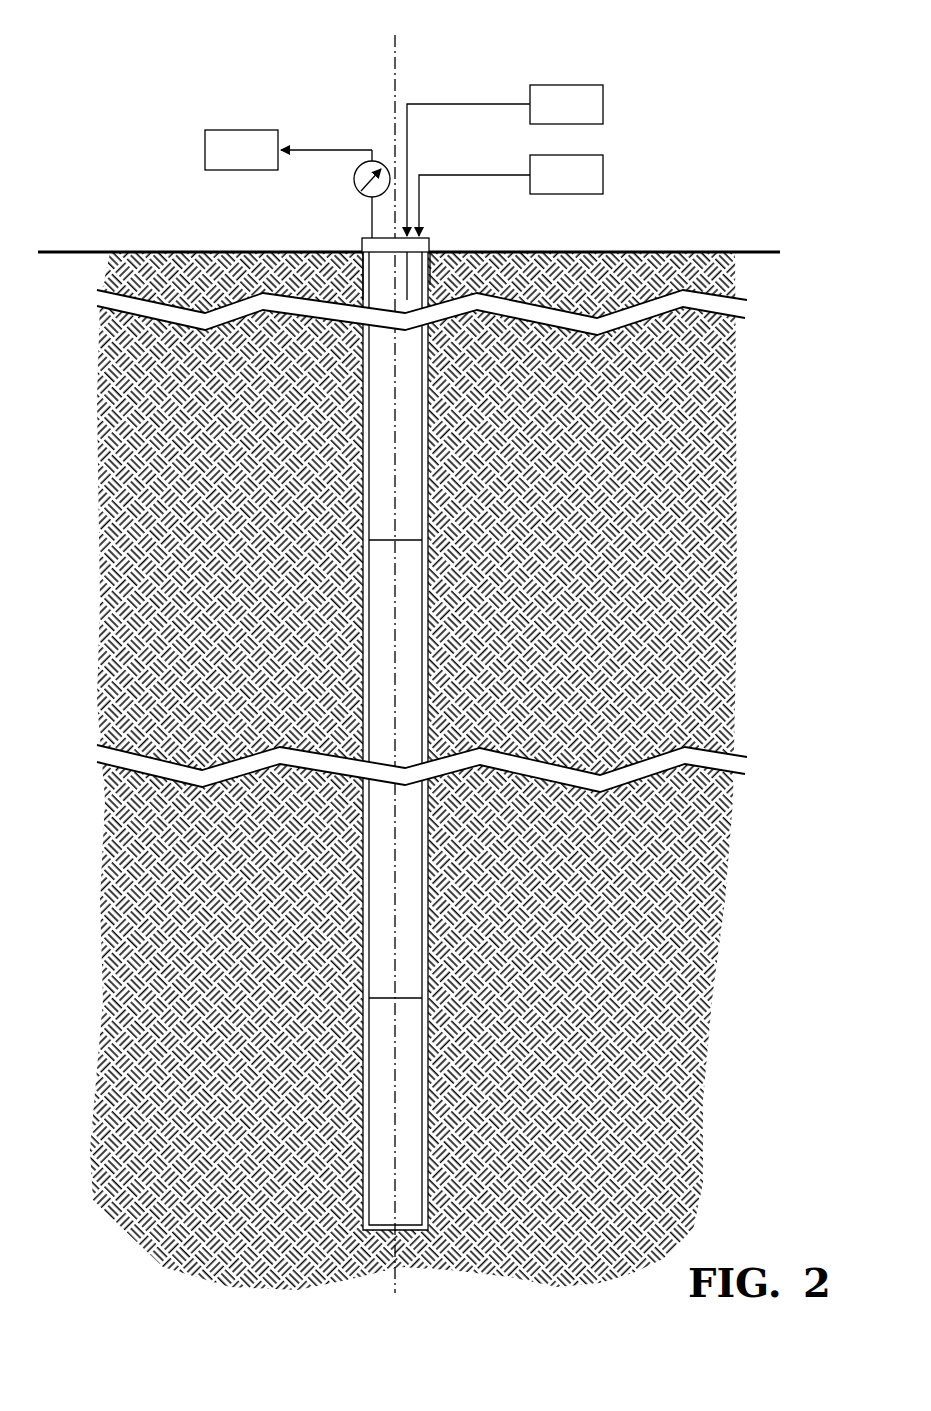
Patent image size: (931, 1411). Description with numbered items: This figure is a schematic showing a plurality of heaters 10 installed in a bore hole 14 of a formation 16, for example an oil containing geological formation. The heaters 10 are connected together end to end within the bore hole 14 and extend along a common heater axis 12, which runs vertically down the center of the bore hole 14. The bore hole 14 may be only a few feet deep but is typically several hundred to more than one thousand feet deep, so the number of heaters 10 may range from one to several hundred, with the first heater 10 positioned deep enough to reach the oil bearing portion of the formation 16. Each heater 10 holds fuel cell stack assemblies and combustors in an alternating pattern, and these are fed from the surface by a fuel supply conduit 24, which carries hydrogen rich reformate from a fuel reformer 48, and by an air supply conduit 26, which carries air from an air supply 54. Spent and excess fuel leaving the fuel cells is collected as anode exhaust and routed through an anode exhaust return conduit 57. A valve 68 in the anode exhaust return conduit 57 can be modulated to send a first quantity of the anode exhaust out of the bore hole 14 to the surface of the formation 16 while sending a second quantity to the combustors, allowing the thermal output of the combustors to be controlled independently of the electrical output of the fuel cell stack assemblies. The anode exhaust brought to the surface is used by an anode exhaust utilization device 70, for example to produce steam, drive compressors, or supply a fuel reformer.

The heater 10 is at (408, 437).
The heater axis 12 is at (395, 83).
The bore hole 14 is at (360, 388).
The formation 16 is at (594, 532).
The fuel supply conduit 24 is at (438, 253).
The air supply conduit 26 is at (430, 285).
The fuel reformer 48 is at (505, 160).
The air supply 54 is at (511, 195).
The anode exhaust return conduit 57 is at (363, 268).
The valve 68 is at (353, 180).
The anode exhaust utilization device 70 is at (288, 150).